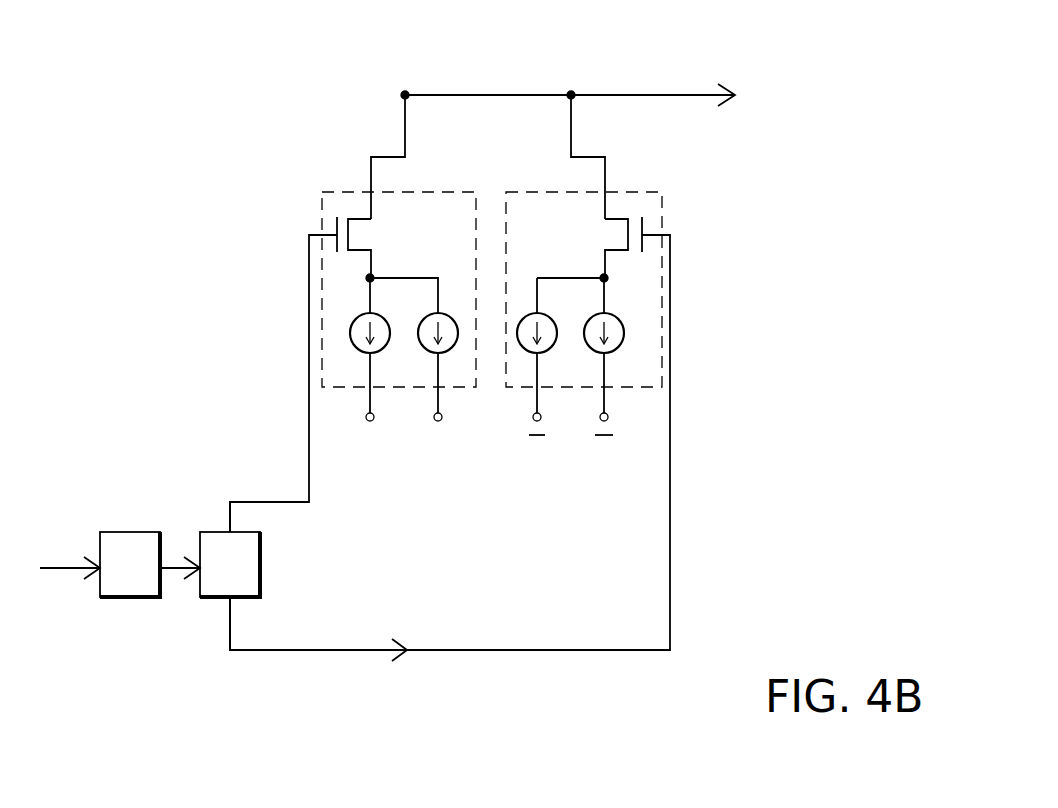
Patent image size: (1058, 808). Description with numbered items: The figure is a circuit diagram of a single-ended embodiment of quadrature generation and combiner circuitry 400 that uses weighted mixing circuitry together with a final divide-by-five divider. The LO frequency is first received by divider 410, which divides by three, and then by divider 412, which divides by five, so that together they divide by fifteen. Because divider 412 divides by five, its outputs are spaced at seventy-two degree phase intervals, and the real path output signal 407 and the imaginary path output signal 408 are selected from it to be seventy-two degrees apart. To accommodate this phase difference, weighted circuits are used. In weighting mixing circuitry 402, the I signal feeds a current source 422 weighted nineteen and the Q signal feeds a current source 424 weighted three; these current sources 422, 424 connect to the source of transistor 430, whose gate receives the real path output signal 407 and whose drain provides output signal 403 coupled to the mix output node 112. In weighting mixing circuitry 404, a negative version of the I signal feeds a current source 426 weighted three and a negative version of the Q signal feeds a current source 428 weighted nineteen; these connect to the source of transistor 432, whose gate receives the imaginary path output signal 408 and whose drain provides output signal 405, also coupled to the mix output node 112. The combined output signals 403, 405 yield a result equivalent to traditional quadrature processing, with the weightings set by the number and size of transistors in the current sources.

The quadrature generation and combiner circuitry 400 is at (178, 335).
The mix output node 112 is at (688, 95).
The weighting mixing circuitry 402 is at (320, 209).
The output signal 403 is at (398, 157).
The weighting mixing circuitry 404 is at (664, 209).
The output signal 405 is at (580, 157).
The real path output signal 407 is at (231, 499).
The imaginary path output signal 408 is at (231, 654).
The divider 410 is at (136, 598).
The divider 412 is at (211, 600).
The current source 422 is at (354, 348).
The current source 424 is at (422, 348).
The current source 426 is at (553, 348).
The current source 428 is at (620, 348).
The transistor 430 is at (364, 217).
The transistor 432 is at (616, 217).